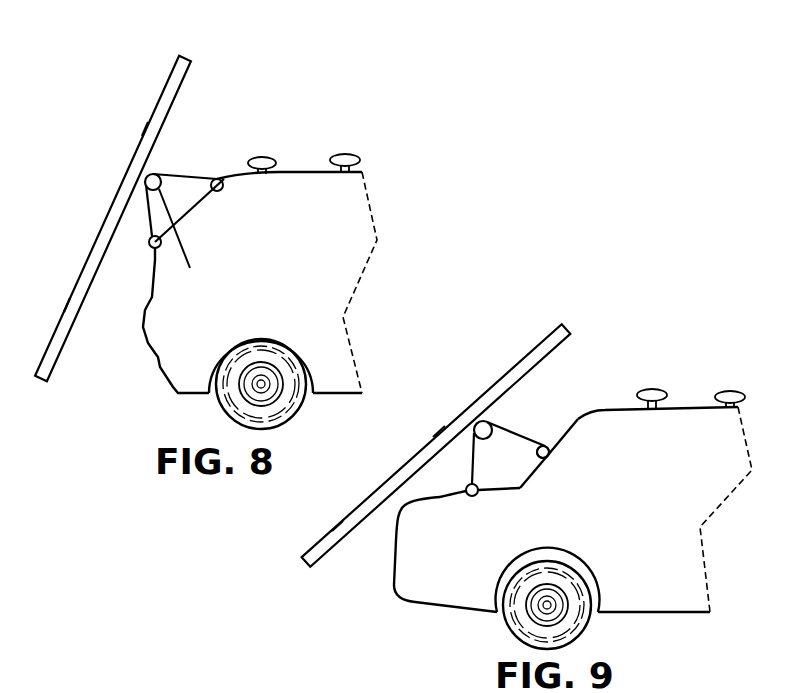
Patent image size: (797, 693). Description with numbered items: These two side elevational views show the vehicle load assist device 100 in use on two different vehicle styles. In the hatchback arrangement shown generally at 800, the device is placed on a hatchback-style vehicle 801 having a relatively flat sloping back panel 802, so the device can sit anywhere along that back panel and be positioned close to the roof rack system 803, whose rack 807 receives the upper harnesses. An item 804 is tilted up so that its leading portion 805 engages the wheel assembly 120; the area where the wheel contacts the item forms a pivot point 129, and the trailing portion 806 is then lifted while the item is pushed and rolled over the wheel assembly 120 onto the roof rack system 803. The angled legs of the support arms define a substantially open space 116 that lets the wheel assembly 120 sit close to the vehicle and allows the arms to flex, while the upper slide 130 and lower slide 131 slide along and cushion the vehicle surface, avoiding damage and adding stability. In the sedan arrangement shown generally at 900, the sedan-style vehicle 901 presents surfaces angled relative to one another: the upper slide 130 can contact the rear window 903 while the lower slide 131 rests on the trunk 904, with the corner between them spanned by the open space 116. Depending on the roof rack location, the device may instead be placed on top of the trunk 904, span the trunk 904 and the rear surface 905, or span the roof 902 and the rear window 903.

In FIG. 8, the hatchback-style vehicle loading arrangement 800 is at (283, 75).
In FIG. 9, the sedan-style vehicle loading arrangement 900 is at (668, 318).
In FIG. 8, the vehicle load assist device 100 is at (195, 196).
In FIG. 8, the leading portion of the item 805 is at (168, 72).
In FIG. 9, the leading portion of the item 805 is at (527, 343).
In FIG. 8, the item 804 is at (141, 141).
In FIG. 9, the item 804 is at (433, 437).
In FIG. 8, the trailing portion of the item 806 is at (63, 312).
In FIG. 9, the trailing portion of the item 806 is at (332, 531).
In FIG. 8, the roof rack system 803 is at (269, 266).
In FIG. 9, the roof rack system 803 is at (562, 485).
In FIG. 8, the hatchback-style vehicle 801 is at (348, 228).
In FIG. 8, the rack 807 is at (262, 157).
In FIG. 9, the rack 807 is at (653, 389).
In FIG. 8, the back panel 802 is at (200, 210).
In FIG. 8, the wheel assembly 120 is at (183, 215).
In FIG. 9, the wheel assembly 120 is at (452, 428).
In FIG. 8, the substantially open space 116 is at (163, 217).
In FIG. 9, the substantially open space 116 is at (490, 445).
In FIG. 8, the pivot point 129 is at (159, 176).
In FIG. 9, the pivot point 129 is at (497, 409).
In FIG. 8, the upper slide 130 is at (225, 188).
In FIG. 9, the upper slide 130 is at (547, 466).
In FIG. 8, the lower slide 131 is at (152, 258).
In FIG. 9, the lower slide 131 is at (473, 498).
In FIG. 9, the sedan-style vehicle 901 is at (722, 447).
In FIG. 9, the roof 902 is at (625, 405).
In FIG. 9, the rear window 903 is at (553, 457).
In FIG. 9, the trunk 904 is at (447, 498).
In FIG. 9, the rear surface 905 is at (389, 560).